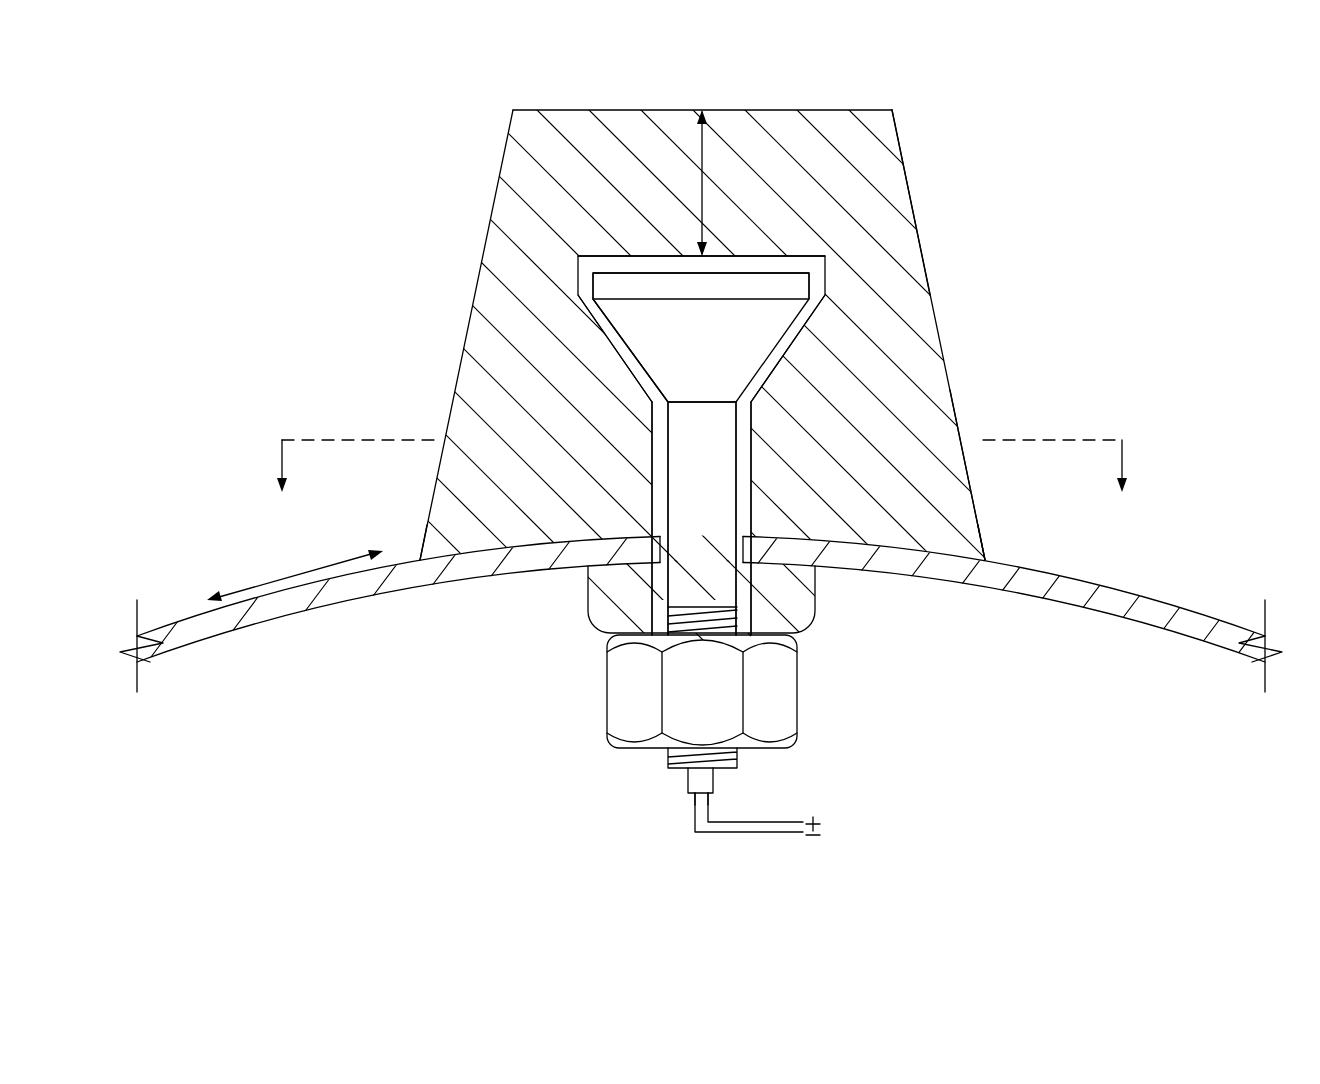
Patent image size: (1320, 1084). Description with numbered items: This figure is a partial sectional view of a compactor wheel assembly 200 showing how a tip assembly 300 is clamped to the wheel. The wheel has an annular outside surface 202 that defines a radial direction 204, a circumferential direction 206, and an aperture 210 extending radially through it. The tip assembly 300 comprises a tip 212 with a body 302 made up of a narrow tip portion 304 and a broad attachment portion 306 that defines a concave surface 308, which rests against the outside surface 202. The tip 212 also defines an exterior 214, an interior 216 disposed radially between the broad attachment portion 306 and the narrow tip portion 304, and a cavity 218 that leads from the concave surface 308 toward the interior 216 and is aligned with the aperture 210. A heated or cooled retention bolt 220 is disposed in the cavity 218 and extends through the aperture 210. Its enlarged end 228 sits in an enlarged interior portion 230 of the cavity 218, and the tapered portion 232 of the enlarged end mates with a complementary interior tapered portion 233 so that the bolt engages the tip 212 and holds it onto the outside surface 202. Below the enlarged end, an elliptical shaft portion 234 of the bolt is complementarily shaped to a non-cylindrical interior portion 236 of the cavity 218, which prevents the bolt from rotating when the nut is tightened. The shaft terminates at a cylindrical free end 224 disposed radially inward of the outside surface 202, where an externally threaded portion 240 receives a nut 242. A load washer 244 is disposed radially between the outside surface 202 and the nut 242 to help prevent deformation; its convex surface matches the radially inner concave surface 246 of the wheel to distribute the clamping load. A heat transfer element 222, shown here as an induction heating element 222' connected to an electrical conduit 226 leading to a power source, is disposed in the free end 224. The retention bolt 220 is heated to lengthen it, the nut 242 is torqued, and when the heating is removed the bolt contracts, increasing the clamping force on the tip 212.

The compactor wheel assembly 200 is at (891, 74).
The tip assembly 300 is at (966, 130).
The body 302 is at (897, 280).
The narrow tip portion 304 is at (627, 110).
The exterior 214 is at (940, 228).
The tip 212 is at (948, 447).
The broad attachment portion 306 is at (957, 541).
The concave surface 308 is at (432, 556).
The interior 216 is at (766, 444).
The enlarged interior portion 230 is at (812, 347).
The tapered portion 232 is at (597, 313).
The interior tapered portion 233 is at (620, 360).
The cavity 218 is at (737, 255).
The enlarged end 228 is at (610, 258).
The shaft portion 234 is at (752, 512).
The retention bolt 220 is at (650, 478).
The interior portion 236 is at (682, 487).
The aperture 210 is at (772, 592).
The load washer 244 is at (756, 563).
The outside surface 202 is at (1128, 585).
The radially inner concave surface 246 is at (1067, 598).
The circumferential direction 206 is at (257, 582).
The radial direction 204 is at (703, 133).
The nut 242 is at (624, 686).
The externally threaded portion 240 is at (742, 752).
The free end 224 is at (737, 766).
The heat transfer element 222 is at (650, 805).
The induction heating element 222' is at (724, 831).
The electrical conduit 226 is at (742, 856).